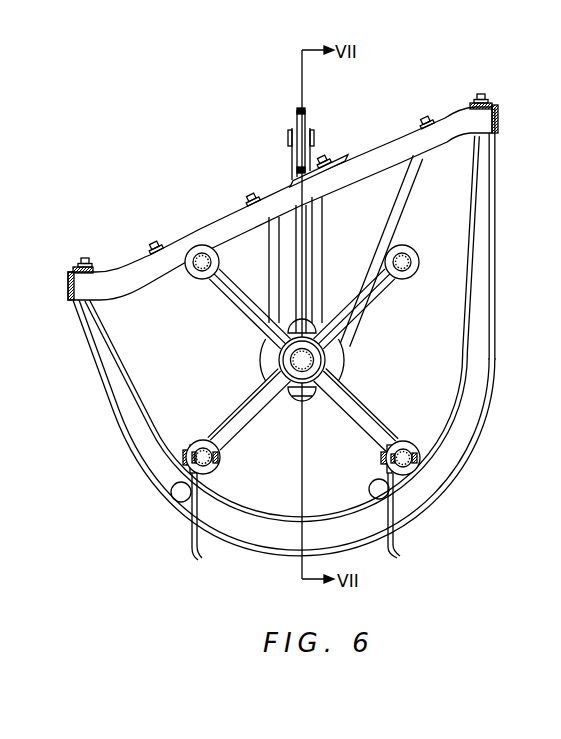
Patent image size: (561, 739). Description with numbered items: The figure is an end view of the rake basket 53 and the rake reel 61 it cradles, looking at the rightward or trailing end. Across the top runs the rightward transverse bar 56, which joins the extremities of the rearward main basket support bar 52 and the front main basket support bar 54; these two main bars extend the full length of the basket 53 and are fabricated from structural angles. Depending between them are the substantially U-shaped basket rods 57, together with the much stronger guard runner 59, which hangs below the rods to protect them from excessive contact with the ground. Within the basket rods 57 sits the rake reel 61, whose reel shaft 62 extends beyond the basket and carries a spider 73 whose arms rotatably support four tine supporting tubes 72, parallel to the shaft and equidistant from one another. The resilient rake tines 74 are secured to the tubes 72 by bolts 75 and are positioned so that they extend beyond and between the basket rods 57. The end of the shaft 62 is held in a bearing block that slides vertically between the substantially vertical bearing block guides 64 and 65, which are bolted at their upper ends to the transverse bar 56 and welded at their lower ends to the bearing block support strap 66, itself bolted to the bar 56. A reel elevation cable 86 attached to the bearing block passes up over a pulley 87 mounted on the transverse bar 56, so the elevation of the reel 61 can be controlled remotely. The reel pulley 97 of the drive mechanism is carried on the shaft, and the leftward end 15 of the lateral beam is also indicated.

The leftward end 15 is at (383, 456).
The rearward main basket support bar 52 is at (78, 267).
The rake basket 53 is at (480, 456).
The front main basket support bar 54 is at (497, 125).
The rightward transverse bar 56 is at (215, 230).
The basket rods 57 is at (443, 438).
The guard runner 59 is at (493, 347).
The rake reel 61 is at (240, 455).
The reel shaft 62 is at (298, 370).
The bearing block guide 64 is at (318, 222).
The bearing block guide 65 is at (272, 238).
The bearing block support strap 66 is at (407, 182).
The tine supporting tubes 72 is at (409, 253).
The spiders 73 is at (352, 397).
The rake tines 74 is at (192, 532).
The bolts 75 is at (188, 449).
The reel elevation cable 86 is at (303, 262).
The pulley 87 is at (295, 122).
The reel pulley 97 is at (262, 353).